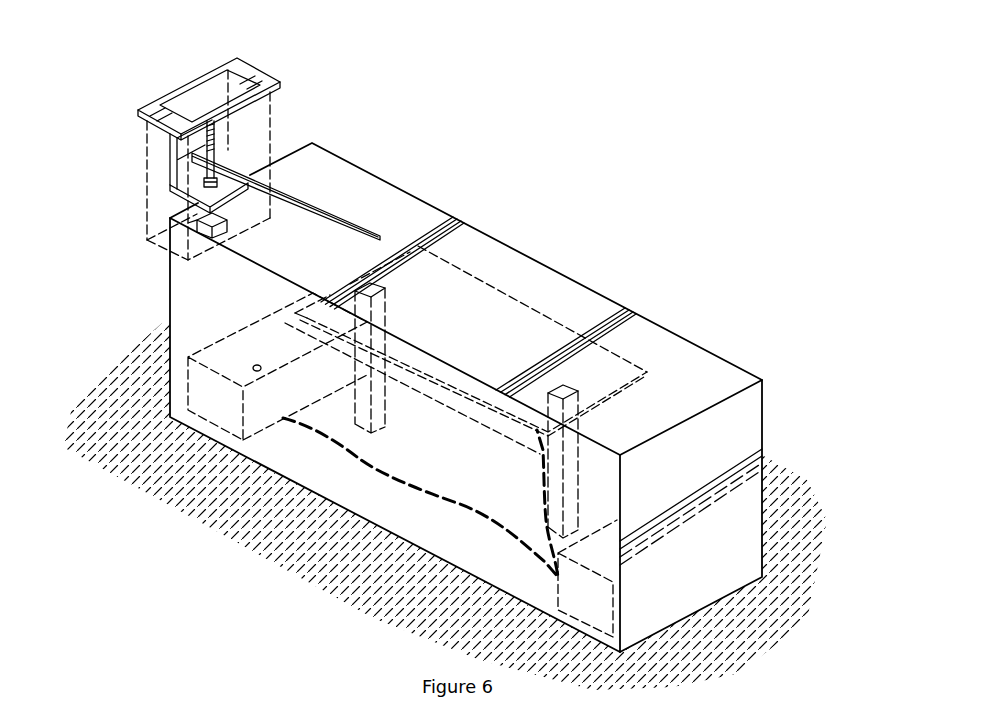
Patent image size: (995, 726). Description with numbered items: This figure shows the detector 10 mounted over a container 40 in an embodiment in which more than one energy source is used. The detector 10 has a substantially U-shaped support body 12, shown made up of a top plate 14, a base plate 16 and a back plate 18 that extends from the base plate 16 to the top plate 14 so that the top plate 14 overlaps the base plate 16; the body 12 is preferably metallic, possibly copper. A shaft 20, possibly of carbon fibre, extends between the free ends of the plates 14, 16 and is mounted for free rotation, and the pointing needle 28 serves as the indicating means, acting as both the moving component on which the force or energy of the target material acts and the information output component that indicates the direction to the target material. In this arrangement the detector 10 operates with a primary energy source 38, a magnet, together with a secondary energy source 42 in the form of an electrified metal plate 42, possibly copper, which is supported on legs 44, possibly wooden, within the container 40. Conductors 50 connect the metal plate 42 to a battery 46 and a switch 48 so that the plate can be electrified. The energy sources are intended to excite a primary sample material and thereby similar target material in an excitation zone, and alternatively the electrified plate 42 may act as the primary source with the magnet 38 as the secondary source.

The detection device 10 is at (302, 90).
The support body 12 is at (188, 72).
The top plate 14 is at (160, 112).
The base plate 16 is at (172, 185).
The back plate 18 is at (170, 153).
The shaft 20 is at (212, 128).
The pointing needle 28 is at (304, 197).
The primary energy source 38 is at (160, 250).
The container 40 is at (748, 447).
The secondary energy source 42 is at (540, 338).
The legs 44 is at (580, 418).
The battery 46 is at (175, 418).
The switch 48 is at (570, 605).
The conductors 50 is at (538, 500).